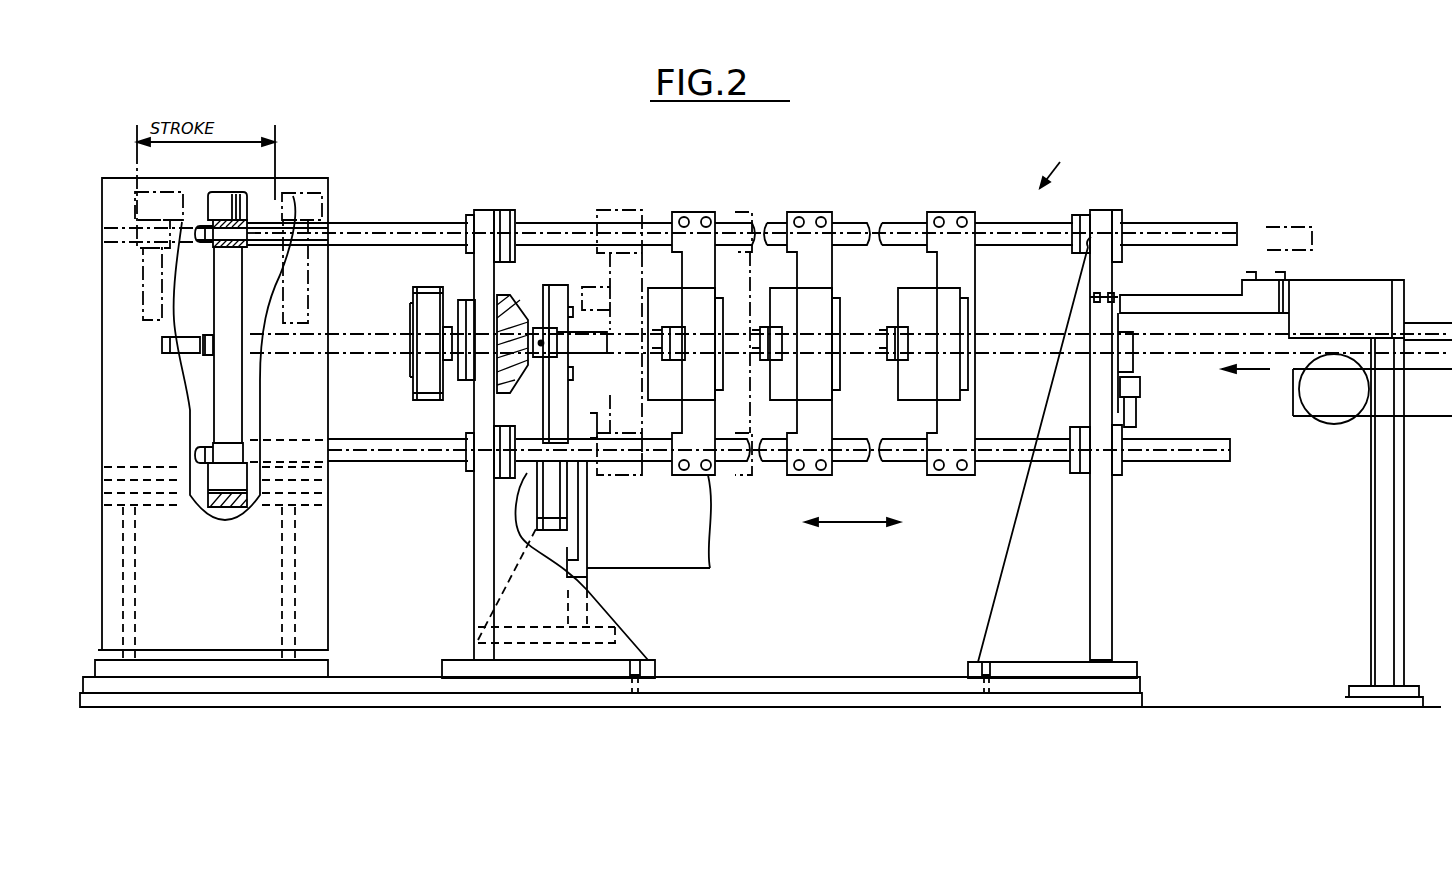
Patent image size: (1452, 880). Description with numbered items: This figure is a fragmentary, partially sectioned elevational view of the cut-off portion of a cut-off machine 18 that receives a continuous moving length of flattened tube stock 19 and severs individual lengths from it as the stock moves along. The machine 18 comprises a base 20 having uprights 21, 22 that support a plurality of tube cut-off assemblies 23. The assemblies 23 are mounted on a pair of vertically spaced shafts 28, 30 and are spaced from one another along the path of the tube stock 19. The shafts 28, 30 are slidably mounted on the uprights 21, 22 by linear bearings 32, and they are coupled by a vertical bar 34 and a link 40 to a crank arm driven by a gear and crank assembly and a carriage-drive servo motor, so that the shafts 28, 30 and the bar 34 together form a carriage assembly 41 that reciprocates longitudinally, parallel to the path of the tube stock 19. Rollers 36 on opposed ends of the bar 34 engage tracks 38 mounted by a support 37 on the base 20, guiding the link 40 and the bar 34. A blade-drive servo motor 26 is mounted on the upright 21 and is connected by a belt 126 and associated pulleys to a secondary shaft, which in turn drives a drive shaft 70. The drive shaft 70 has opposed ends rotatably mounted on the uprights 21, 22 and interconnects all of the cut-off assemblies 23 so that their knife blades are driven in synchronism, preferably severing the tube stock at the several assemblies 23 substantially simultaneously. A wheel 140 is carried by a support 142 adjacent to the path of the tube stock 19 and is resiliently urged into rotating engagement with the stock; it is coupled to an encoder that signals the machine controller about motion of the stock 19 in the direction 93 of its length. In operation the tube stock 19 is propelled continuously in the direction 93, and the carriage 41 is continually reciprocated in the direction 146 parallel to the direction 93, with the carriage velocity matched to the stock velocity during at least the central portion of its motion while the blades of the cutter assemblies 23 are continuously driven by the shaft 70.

The cut-off machine 18 is at (1060, 162).
The tube stock 19 is at (1193, 347).
The base 20 is at (840, 680).
The upright 21 is at (472, 606).
The upright 22 is at (1007, 590).
The tube cut-off assemblies 23 is at (693, 207).
The servo motor 26 is at (675, 560).
The shaft 28 is at (1040, 235).
The shaft 30 is at (1000, 467).
The linear bearings 32 is at (515, 220).
The vertical bar 34 is at (222, 297).
The rollers 36 is at (240, 195).
The support 37 is at (322, 627).
The tracks 38 is at (280, 202).
The link 40 is at (190, 353).
The carriage assembly 41 is at (572, 215).
The drive shaft 70 is at (617, 325).
The direction of stock motion 93 is at (1260, 370).
The belt 126 is at (550, 528).
The wheel 140 is at (1330, 422).
The support 142 is at (1377, 564).
The direction of carriage reciprocation 146 is at (853, 523).